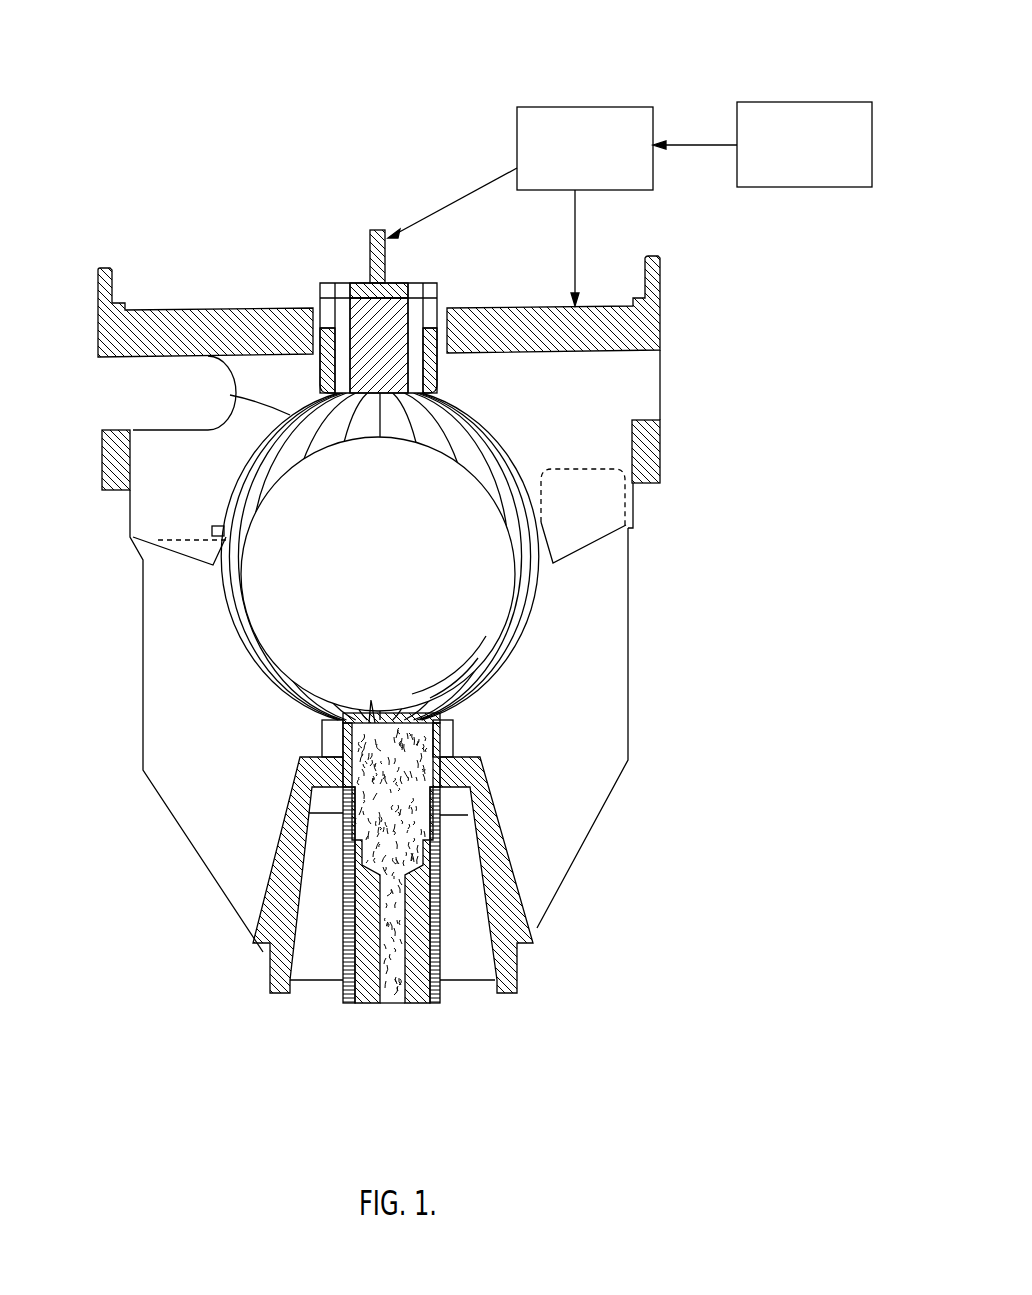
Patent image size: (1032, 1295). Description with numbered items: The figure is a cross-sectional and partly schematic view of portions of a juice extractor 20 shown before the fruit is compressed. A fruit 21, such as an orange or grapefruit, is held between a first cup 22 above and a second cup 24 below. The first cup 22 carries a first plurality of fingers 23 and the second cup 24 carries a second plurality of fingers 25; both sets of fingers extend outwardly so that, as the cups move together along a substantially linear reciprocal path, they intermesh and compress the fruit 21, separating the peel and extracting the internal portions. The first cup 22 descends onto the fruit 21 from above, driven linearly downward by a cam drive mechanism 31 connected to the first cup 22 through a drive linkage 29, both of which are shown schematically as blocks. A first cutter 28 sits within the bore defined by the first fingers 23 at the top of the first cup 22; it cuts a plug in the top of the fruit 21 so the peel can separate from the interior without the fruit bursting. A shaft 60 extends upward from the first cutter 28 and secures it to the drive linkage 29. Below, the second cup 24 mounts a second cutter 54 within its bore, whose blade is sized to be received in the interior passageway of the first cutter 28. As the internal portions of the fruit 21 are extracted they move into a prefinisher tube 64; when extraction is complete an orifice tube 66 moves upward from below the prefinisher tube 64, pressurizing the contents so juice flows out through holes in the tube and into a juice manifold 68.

The juice extractor 20 is at (722, 59).
The fruit 21 is at (370, 592).
The first cup 22 is at (666, 400).
The first plurality of fingers 23 is at (317, 412).
The second cup 24 is at (628, 620).
The second plurality of fingers 25 is at (331, 706).
The first cutter 28 is at (331, 284).
The drive linkage 29 is at (516, 127).
The cam drive mechanism 31 is at (874, 115).
The second cutter 54 is at (430, 740).
The shaft 60 is at (387, 248).
The prefinisher tube 64 is at (352, 920).
The orifice tube 66 is at (420, 995).
The juice manifold 68 is at (452, 927).